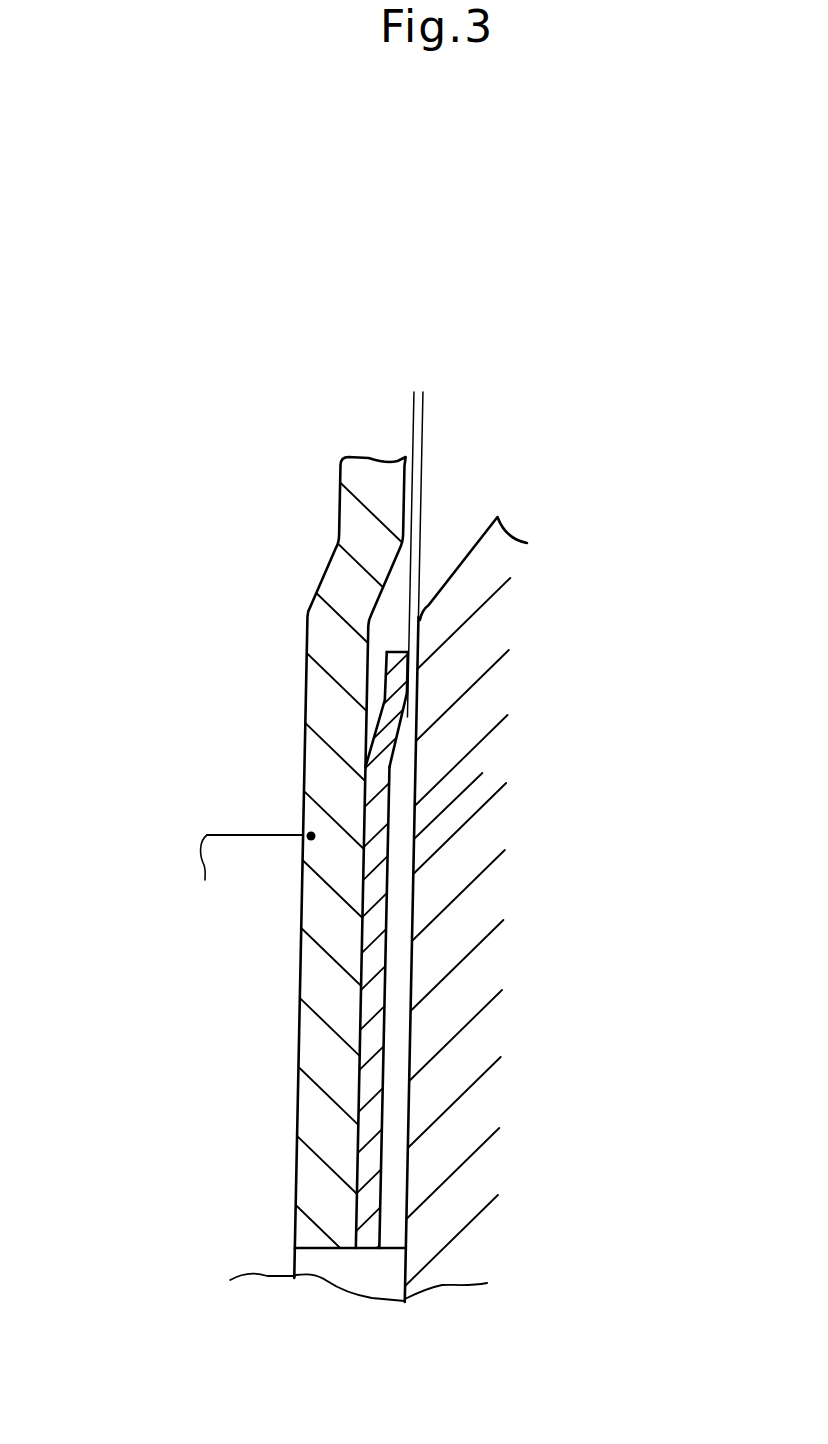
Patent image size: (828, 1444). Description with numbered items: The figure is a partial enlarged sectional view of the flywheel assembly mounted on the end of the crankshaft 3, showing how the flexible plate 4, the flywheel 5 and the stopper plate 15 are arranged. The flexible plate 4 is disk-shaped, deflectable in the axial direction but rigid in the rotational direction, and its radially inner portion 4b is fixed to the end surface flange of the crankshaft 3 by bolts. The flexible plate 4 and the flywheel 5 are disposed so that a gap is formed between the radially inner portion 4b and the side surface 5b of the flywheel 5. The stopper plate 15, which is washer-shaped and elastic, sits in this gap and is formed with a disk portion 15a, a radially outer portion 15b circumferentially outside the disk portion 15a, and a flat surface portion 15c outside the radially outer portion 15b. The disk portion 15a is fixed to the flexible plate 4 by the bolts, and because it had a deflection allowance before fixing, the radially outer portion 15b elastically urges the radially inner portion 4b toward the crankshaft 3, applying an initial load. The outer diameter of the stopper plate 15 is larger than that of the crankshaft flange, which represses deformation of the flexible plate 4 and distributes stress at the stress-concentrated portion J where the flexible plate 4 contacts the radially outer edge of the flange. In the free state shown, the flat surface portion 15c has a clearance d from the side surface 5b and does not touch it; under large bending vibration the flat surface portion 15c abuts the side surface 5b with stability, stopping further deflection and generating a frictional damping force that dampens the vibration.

The crankshaft 3 is at (224, 847).
The flexible plate 4 is at (308, 630).
The radially inner portion 4b is at (320, 912).
The flywheel 5 is at (513, 547).
The side surface 5b is at (410, 997).
The stopper plate 15 is at (396, 957).
The disk portion 15a is at (377, 892).
The radially outer portion 15b is at (395, 722).
The flat surface portion 15c is at (408, 673).
The stress-concentrated portion J is at (303, 828).
The clearance d is at (385, 404).